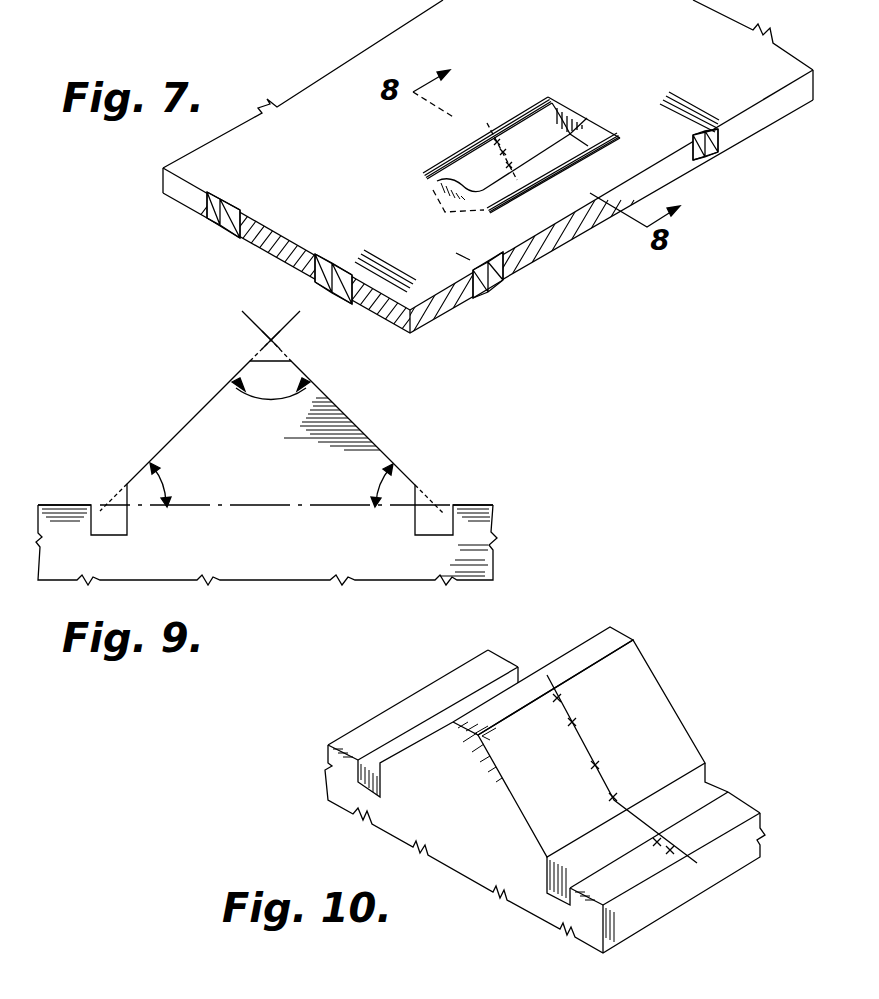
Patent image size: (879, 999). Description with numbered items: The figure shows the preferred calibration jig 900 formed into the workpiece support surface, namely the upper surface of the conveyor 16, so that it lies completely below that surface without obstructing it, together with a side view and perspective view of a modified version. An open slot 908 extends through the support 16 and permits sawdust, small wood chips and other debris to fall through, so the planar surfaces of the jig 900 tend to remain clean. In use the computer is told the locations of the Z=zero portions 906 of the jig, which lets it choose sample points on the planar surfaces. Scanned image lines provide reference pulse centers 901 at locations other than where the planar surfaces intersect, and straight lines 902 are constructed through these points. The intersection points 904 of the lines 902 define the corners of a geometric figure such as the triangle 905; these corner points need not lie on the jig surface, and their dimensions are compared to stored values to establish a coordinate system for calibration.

In FIG. 7, the conveyor 16 is at (313, 184).
In FIG. 7, the jig 900 is at (591, 103).
In FIG. 9, the jig 900 is at (333, 432).
In FIG. 10, the jig 900 is at (480, 873).
In FIG. 7, the pulse centers 901 is at (500, 148).
In FIG. 10, the pulse centers 901 is at (613, 797).
In FIG. 7, the lines 902 is at (488, 124).
In FIG. 9, the lines 902 is at (247, 320).
In FIG. 10, the lines 902 is at (580, 738).
In FIG. 9, the intersection points 904 is at (270, 338).
In FIG. 10, the intersection points 904 is at (632, 824).
In FIG. 9, the triangle 905 is at (283, 472).
In FIG. 7, the Z=zero portions 906 is at (440, 145).
In FIG. 9, the Z=zero portions 906 is at (57, 503).
In FIG. 10, the Z=zero portions 906 is at (440, 716).
In FIG. 7, the slot 908 is at (447, 183).